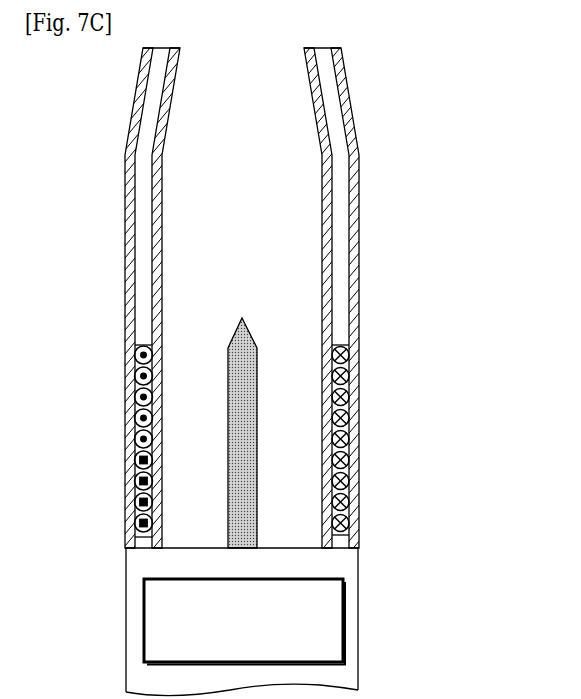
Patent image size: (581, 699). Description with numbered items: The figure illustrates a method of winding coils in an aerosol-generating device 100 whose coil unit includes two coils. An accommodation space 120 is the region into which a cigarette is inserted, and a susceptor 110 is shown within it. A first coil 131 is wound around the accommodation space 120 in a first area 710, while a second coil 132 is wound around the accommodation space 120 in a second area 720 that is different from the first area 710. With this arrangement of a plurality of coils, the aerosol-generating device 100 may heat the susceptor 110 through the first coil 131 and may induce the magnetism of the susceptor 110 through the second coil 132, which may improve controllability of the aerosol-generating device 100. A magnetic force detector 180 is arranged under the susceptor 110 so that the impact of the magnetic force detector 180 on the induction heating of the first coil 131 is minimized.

The aerosol-generating device 100 is at (104, 104).
The susceptor 110 is at (238, 342).
The accommodation space 120 is at (280, 144).
The first coil 131 is at (140, 351).
The second coil 132 is at (142, 526).
The first area 710 is at (118, 348).
The second area 720 is at (118, 458).
The magnetic force detector 180 is at (345, 610).